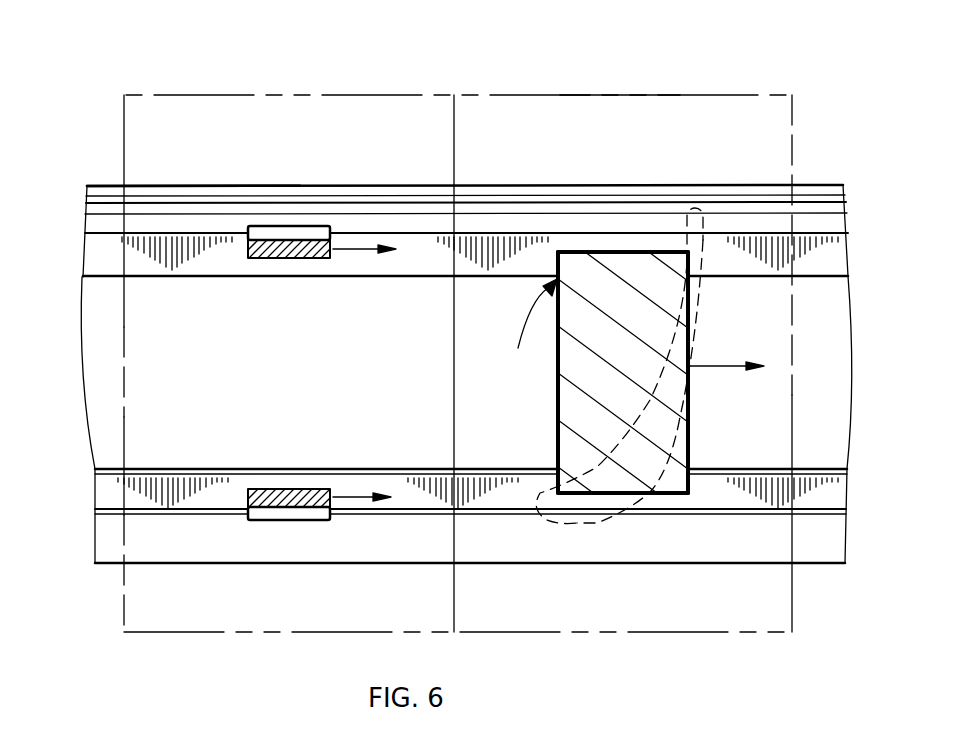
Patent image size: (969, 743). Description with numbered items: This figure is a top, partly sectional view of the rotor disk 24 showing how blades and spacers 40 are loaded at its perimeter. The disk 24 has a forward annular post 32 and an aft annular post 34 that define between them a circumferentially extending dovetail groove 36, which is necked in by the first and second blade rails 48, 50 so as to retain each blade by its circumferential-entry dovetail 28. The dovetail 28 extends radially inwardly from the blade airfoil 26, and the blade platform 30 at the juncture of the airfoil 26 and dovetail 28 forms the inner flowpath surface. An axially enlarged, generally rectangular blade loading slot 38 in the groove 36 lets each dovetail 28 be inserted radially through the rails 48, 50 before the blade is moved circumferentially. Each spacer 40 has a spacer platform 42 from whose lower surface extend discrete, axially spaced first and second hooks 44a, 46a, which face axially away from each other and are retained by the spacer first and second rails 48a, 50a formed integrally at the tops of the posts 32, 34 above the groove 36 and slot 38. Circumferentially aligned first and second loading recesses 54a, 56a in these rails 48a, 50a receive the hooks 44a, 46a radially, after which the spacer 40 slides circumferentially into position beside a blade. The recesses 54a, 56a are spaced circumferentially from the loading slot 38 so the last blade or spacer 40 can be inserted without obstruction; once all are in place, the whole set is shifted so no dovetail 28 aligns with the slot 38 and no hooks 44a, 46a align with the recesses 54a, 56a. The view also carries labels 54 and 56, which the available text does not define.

The rotor disk 24 is at (82, 178).
The airfoil 26 is at (577, 524).
The circumferential-entry dovetail 28 is at (578, 396).
The blade platform 30 is at (620, 93).
The first annular post 32 is at (95, 488).
The second annular post 34 is at (82, 248).
The dovetail groove 36 is at (94, 383).
The blade loading slot 38 is at (521, 320).
The spacer 40 is at (222, 95).
The spacer platform 42 is at (352, 93).
The first hook 44a is at (292, 489).
The second hook 46a is at (262, 259).
The first rail 48 is at (152, 469).
The first spacer rail 48a is at (432, 509).
The second rail 50 is at (152, 278).
The second spacer rail 50a is at (430, 240).
The lower belt surface 54 is at (673, 496).
The first loading recess 54a is at (262, 521).
The upper belt surface 56 is at (618, 250).
The second loading recess 56a is at (280, 226).